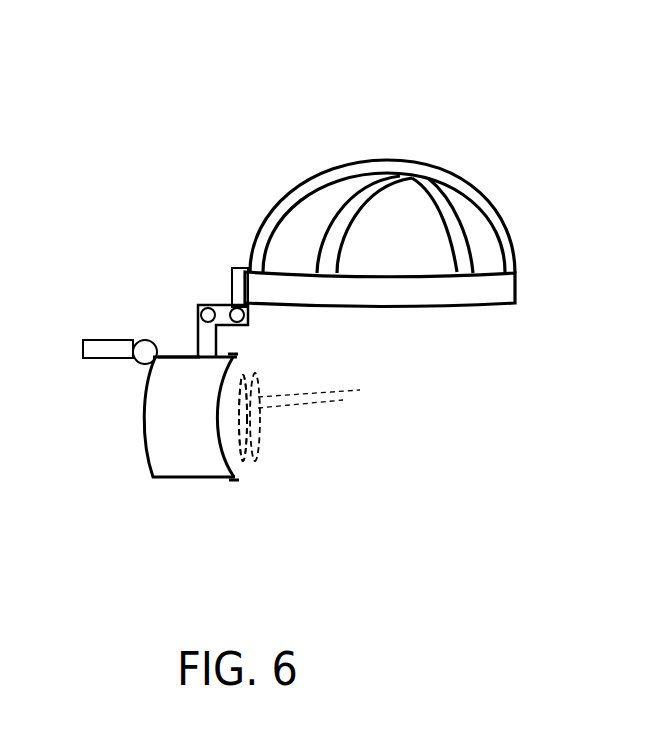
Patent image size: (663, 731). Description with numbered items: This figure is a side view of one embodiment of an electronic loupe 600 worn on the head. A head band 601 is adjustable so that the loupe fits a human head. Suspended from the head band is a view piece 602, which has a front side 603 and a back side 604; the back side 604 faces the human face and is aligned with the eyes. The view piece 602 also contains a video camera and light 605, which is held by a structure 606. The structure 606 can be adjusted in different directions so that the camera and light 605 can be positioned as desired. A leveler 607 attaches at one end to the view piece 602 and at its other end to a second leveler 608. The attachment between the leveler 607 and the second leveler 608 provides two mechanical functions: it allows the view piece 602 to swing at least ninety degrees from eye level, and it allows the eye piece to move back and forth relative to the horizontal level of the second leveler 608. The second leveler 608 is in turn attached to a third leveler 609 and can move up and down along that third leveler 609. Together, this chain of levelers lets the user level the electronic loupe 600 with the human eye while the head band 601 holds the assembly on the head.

The electronic loupe 600 is at (380, 128).
The head band 601 is at (447, 173).
The view piece 602 is at (173, 353).
The front side 603 is at (145, 440).
The back side 604 is at (245, 462).
The video camera and light 605 is at (100, 350).
The structure 606 is at (143, 358).
The leveler 607 is at (217, 340).
The second leveler 608 is at (227, 308).
The third leveler 609 is at (241, 268).